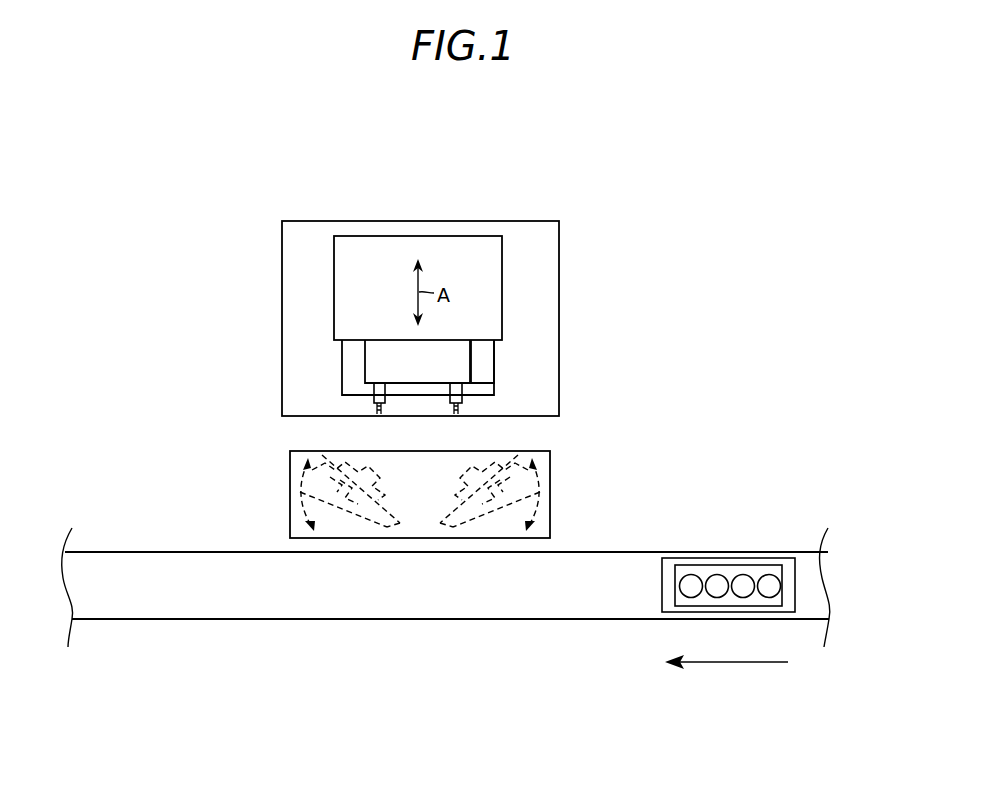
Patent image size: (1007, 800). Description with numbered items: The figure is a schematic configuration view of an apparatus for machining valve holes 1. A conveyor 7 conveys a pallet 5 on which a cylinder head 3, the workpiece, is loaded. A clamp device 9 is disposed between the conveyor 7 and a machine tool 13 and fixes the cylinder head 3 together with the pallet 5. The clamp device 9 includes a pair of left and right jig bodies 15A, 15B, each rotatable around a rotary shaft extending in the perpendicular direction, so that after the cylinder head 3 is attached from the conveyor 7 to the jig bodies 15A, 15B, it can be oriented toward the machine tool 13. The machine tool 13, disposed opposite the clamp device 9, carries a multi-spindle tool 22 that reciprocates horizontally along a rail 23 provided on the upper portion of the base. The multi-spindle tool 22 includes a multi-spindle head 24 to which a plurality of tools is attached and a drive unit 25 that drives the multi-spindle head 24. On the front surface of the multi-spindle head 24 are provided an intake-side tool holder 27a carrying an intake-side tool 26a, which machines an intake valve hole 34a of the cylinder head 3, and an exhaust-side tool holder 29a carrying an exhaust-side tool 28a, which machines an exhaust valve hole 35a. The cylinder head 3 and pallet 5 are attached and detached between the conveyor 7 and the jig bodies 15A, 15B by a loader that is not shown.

The apparatus for machining valve holes 1 is at (672, 164).
The machine tool 13 is at (551, 247).
The multi-spindle tool 22 is at (222, 258).
The drive unit 25 is at (341, 289).
The multi-spindle head 24 is at (374, 359).
The rail 23 is at (487, 355).
The intake-side tool holder 27a is at (374, 392).
The intake-side tool 26a is at (377, 409).
The exhaust-side tool holder 29a is at (462, 392).
The exhaust-side tool 28a is at (457, 409).
The clamp device 9 is at (550, 525).
The jig body 15B is at (302, 500).
The jig body 15A is at (545, 502).
The intake valve hole 34a is at (378, 490).
The exhaust valve hole 35a is at (458, 490).
The conveyor 7 is at (562, 613).
The pallet 5 is at (753, 562).
The cylinder head 3 is at (704, 572).